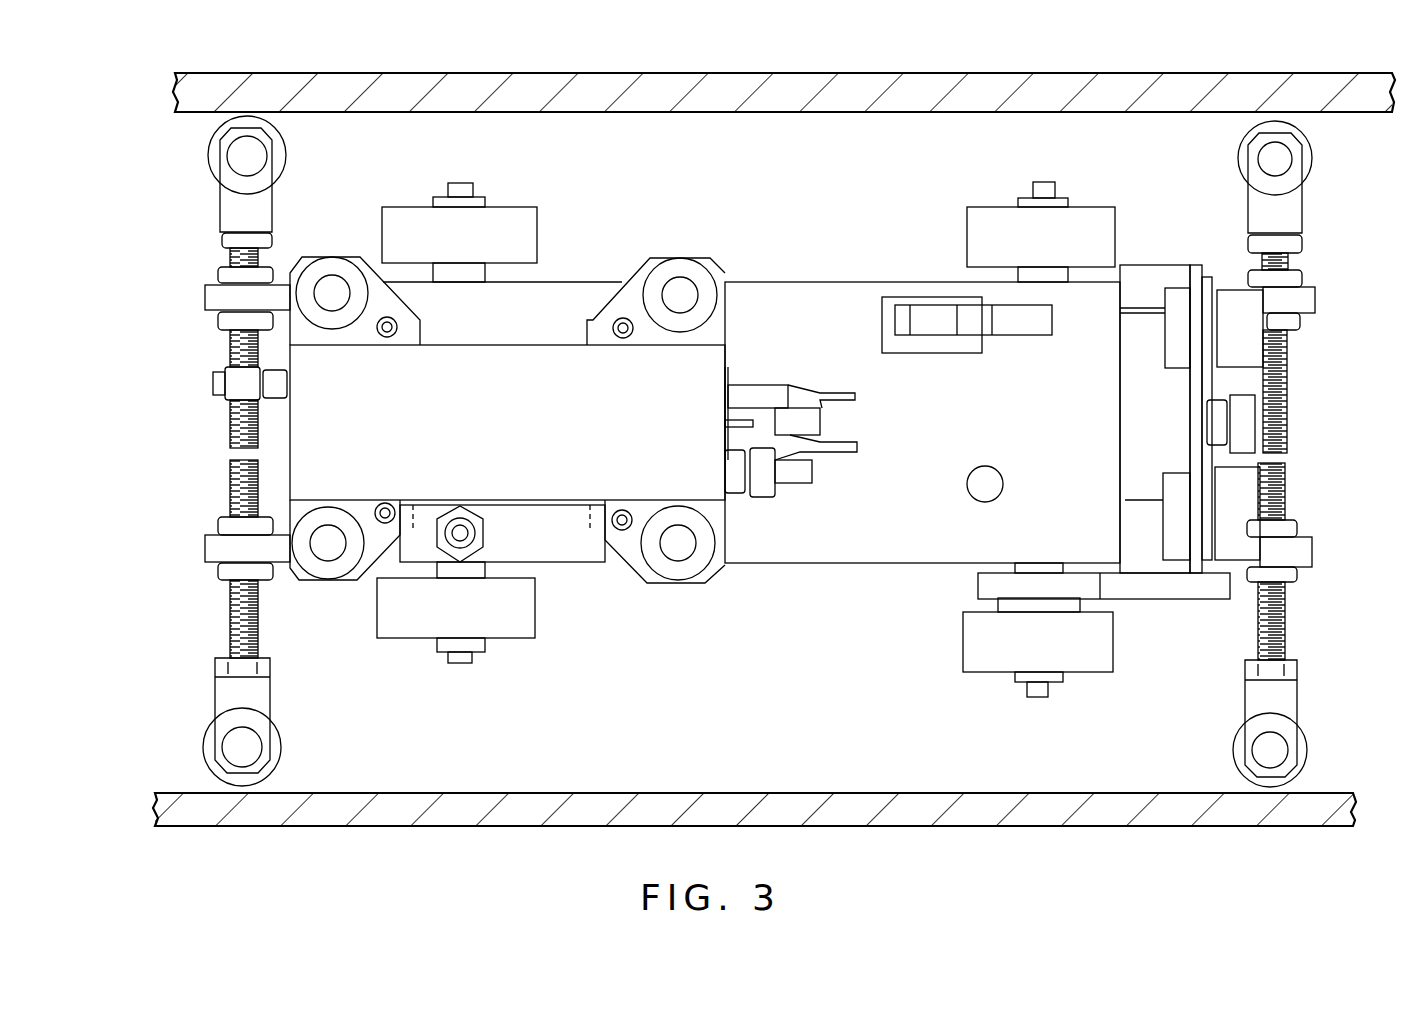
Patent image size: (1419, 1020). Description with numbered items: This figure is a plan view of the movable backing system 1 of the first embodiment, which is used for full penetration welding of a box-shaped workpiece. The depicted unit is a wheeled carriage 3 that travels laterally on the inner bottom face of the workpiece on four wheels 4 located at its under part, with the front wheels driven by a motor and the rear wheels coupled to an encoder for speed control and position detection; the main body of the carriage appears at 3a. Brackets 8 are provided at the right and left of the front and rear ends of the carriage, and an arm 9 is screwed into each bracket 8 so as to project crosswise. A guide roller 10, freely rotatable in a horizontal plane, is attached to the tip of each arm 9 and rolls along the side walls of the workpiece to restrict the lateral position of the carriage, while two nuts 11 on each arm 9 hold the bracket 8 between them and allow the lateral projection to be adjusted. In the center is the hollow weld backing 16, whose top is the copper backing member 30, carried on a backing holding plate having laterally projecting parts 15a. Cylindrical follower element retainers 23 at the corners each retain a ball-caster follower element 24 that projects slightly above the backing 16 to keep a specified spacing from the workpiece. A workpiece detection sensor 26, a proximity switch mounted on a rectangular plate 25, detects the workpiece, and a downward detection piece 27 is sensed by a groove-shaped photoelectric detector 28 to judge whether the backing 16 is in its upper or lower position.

The movable backing system 1 is at (1387, 250).
The wheeled carriage 3 is at (873, 569).
The frame main portion 3a is at (848, 295).
The wheels 4 is at (522, 208).
The brackets 8 is at (212, 297).
The arm 9 is at (235, 352).
The guide roller 10 is at (283, 142).
The nuts 11 is at (235, 265).
The projecting parts 15a is at (362, 258).
The weld backing 16 is at (528, 343).
The follower element retainers 23 is at (322, 282).
The follower element 24 is at (333, 283).
The rectangular plate 25 is at (582, 550).
The workpiece detection sensor 26 is at (462, 537).
The detection piece 27 is at (745, 420).
The photoelectric detector 28 is at (778, 392).
The backing member 30 is at (563, 357).